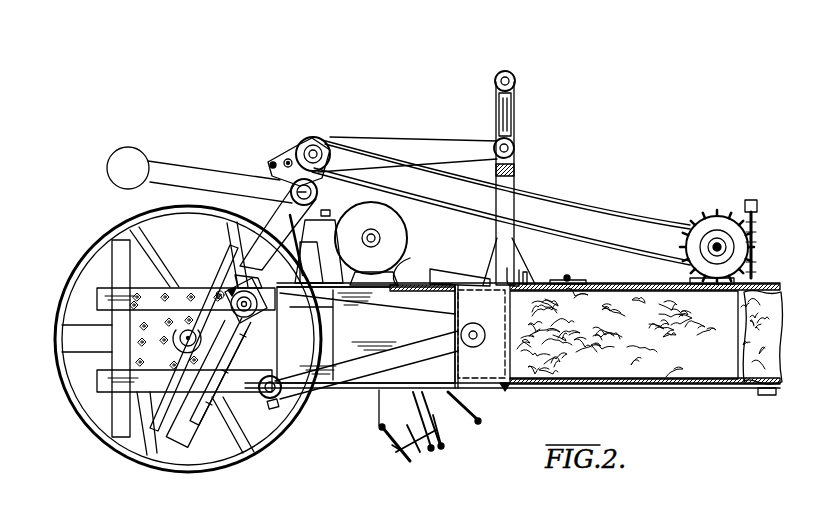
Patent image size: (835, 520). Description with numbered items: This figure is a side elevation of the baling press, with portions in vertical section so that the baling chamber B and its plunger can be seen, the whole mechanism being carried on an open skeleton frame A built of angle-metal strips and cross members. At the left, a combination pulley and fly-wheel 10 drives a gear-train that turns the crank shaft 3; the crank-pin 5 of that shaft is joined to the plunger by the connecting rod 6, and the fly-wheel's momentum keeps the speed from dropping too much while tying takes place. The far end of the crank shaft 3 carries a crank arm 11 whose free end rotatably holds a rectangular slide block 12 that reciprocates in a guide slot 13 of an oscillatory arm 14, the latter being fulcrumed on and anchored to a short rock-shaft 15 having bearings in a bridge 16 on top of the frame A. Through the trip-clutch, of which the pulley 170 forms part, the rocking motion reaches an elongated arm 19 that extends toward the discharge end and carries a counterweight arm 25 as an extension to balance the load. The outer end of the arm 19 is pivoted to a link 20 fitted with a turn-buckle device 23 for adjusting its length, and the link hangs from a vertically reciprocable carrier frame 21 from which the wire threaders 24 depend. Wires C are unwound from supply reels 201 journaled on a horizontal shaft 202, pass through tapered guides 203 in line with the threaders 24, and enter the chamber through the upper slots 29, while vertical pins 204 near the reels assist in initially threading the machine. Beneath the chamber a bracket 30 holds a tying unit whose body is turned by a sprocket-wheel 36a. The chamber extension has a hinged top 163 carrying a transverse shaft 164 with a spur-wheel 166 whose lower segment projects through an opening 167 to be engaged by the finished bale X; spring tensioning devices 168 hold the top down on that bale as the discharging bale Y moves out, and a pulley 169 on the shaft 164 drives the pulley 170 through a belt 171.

The combination pulley and fly-wheel 10 is at (102, 256).
The counterweight arm 25 is at (188, 178).
The rock-shaft 15 is at (296, 188).
The pulley 170 is at (318, 139).
The elongated arm 19 is at (452, 160).
The link 20 is at (514, 84).
The turn-buckle device 23 is at (513, 120).
The carrier frame 21 is at (515, 170).
The threaders 24 is at (498, 215).
The belt 171 is at (592, 208).
The spur-wheel 166 is at (712, 214).
The spring tensioning devices 168 is at (750, 222).
The transverse horizontal shaft 164 is at (700, 246).
The pulley 169 is at (738, 252).
The supply reels 201 is at (386, 216).
The horizontal shaft 202 is at (378, 244).
The tapered guides 203 is at (443, 276).
The slots 29 is at (493, 275).
The vertical pins 204 is at (530, 277).
The hinged top 163 is at (616, 282).
The opening 167 is at (693, 280).
The slide block 12 is at (235, 286).
The crank arm 11 is at (206, 322).
The bridge 16 is at (306, 230).
The crank shaft 3 is at (176, 336).
The guide slot 13 is at (182, 422).
The oscillatory arm 14 is at (186, 442).
The crank-pin 5 is at (280, 396).
The connecting rod 6 is at (323, 378).
The bracket 30 is at (444, 424).
The sprocket-wheel 36a is at (448, 440).
The frame A is at (98, 304).
The baling chamber B is at (371, 378).
The wires C is at (407, 274).
The section I is at (494, 384).
The finished bale X is at (640, 365).
The discharging bale Y is at (765, 365).